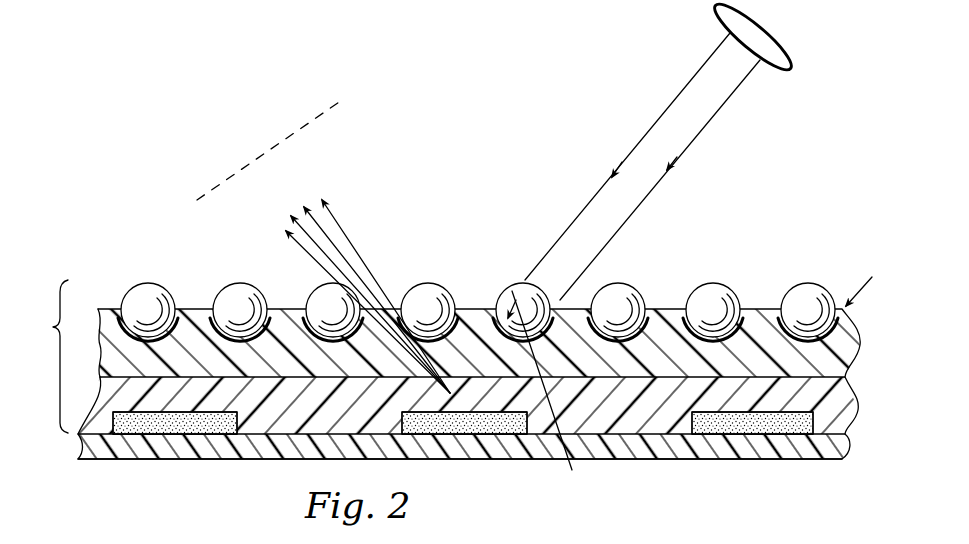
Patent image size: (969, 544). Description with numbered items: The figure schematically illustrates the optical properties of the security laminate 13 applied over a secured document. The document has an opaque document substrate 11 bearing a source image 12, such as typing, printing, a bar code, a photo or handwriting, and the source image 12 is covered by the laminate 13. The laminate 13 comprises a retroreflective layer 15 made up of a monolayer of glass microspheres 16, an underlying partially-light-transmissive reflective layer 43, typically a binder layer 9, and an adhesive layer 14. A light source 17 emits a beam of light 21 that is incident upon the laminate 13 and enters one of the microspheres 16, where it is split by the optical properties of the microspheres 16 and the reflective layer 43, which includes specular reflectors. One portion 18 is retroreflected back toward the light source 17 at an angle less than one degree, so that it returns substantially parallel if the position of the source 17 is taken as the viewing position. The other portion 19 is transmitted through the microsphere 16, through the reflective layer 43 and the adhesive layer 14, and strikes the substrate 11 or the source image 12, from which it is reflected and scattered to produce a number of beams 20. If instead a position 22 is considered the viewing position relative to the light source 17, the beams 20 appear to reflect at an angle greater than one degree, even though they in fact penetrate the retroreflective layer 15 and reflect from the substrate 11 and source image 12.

The binder layer 9 is at (851, 337).
The document substrate 11 is at (174, 461).
The source image 12 is at (475, 436).
The security laminate 13 is at (47, 356).
The adhesive layer 14 is at (846, 407).
The retroreflective layer 15 is at (873, 279).
The microspheres 16 is at (158, 283).
The light source 17 is at (788, 47).
The retroreflected portion 18 is at (647, 133).
The transmitted portion 19 is at (548, 393).
The beams 20 is at (341, 227).
The beam of light 21 is at (706, 125).
The viewing position 22 is at (282, 140).
The partially-light-transmissive reflective layer 43 is at (843, 346).